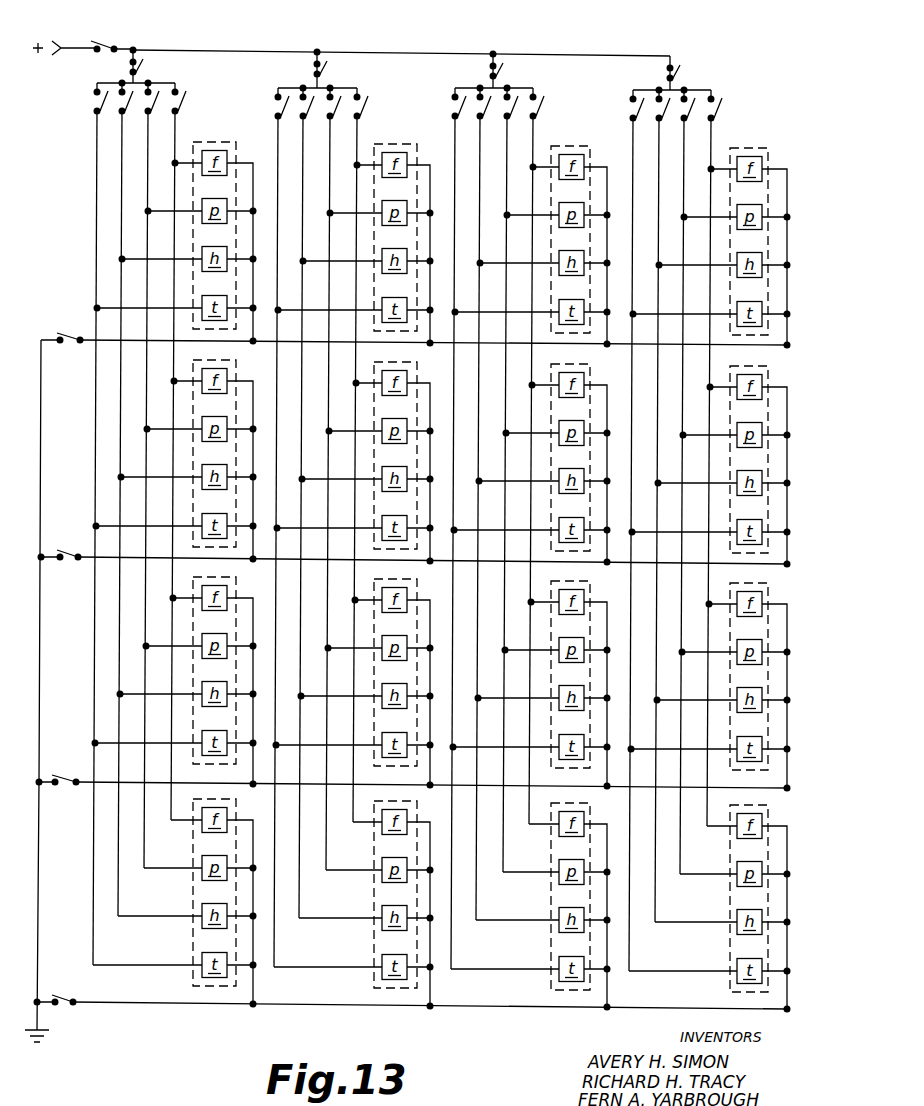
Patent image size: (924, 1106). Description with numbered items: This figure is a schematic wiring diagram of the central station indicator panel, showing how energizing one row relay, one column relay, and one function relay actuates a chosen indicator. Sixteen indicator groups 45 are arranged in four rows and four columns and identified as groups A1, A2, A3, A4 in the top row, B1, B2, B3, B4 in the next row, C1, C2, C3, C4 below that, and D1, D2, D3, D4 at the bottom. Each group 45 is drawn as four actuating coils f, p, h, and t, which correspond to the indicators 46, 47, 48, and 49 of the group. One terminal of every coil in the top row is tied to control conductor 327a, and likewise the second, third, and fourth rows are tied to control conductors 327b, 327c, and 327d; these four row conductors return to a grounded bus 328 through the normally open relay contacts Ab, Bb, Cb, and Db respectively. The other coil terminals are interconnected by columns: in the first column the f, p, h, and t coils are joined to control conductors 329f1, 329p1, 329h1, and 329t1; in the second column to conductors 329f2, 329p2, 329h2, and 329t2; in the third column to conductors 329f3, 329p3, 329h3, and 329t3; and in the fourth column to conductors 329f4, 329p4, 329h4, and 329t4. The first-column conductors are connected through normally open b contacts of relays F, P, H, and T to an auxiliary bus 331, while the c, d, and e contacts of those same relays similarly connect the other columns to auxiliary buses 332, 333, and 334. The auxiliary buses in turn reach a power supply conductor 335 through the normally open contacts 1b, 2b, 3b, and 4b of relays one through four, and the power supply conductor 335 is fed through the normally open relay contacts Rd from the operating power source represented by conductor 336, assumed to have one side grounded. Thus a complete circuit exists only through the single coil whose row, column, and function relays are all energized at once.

The conductor 336 is at (71, 46).
The relay contacts Rd is at (112, 35).
The power supply conductor 335 is at (238, 50).
The normally open b contact of relay 1 1b is at (148, 66).
The auxiliary bus 331 is at (176, 84).
The normally open b contact of relay 2 2b is at (332, 70).
The auxiliary bus 332 is at (358, 89).
The normally open b contact of relay 3 3b is at (508, 71).
The auxiliary bus 333 is at (534, 88).
The normally open b contact of relay 4 4b is at (685, 73).
The auxiliary bus 334 is at (712, 90).
The control conductor 329t1 is at (97, 208).
The control conductor 329h1 is at (122, 188).
The control conductor 329p1 is at (148, 162).
The control conductor 329f1 is at (175, 139).
The control conductor 329t2 is at (300, 967).
The control conductor 329h2 is at (305, 918).
The control conductor 329p2 is at (322, 870).
The control conductor 329f2 is at (350, 822).
The control conductor 329t3 is at (472, 969).
The control conductor 329h3 is at (480, 920).
The control conductor 329p3 is at (499, 872).
The control conductor 329f3 is at (526, 824).
The control conductor 329t4 is at (638, 971).
The control conductor 329h4 is at (658, 922).
The control conductor 329p4 is at (676, 874).
The control conductor 329f4 is at (706, 826).
The normally open relay contacts Ab is at (67, 348).
The control conductor 327a is at (102, 343).
The normally open relay contacts Bb is at (66, 565).
The control conductor 327b is at (100, 560).
The normally open relay contacts Cb is at (64, 790).
The control conductor 327c is at (100, 786).
The normally open relay contacts Db is at (62, 1011).
The control conductor 327d is at (112, 1004).
The grounded bus 328 is at (41, 664).
The indicator group 45 is at (194, 143).
The indicator 46 is at (228, 158).
The indicator 47 is at (229, 207).
The indicator 48 is at (229, 255).
The indicator 49 is at (229, 303).
The indicator group A1 is at (175, 232).
The indicator group A2 is at (354, 234).
The indicator group A3 is at (531, 235).
The indicator group A4 is at (710, 237).
The indicator group B1 is at (174, 450).
The indicator group B2 is at (353, 452).
The indicator group B3 is at (530, 453).
The indicator group B4 is at (709, 455).
The indicator group C1 is at (174, 671).
The indicator group C2 is at (353, 672).
The indicator group C3 is at (530, 674).
The indicator group C4 is at (709, 676).
The indicator group D1 is at (173, 892).
The indicator group D2 is at (352, 894).
The indicator group D3 is at (529, 895).
The indicator group D4 is at (708, 897).